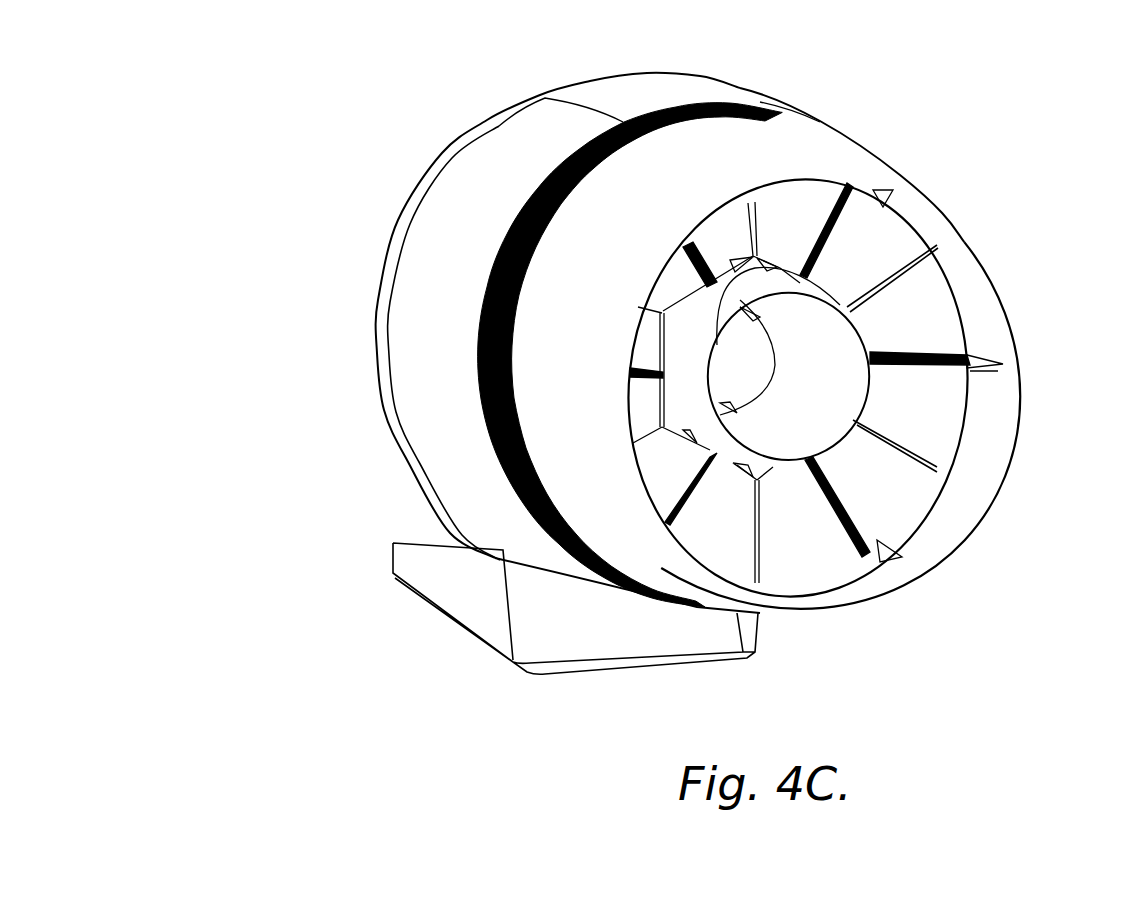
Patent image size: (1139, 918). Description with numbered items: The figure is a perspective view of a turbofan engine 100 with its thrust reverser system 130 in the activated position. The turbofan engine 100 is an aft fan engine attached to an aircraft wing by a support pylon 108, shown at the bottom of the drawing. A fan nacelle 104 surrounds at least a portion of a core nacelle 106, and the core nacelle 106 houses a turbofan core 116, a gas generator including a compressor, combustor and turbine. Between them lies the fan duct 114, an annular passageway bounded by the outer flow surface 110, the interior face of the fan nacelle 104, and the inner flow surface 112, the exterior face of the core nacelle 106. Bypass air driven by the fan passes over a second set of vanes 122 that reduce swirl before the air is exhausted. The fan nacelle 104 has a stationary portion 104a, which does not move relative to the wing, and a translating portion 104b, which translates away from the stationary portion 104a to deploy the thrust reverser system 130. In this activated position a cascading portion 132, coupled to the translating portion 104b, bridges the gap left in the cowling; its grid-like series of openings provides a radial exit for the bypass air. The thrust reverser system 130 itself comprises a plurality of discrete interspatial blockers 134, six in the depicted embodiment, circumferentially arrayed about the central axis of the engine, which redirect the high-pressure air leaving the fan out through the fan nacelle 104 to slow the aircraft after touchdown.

The turbofan engine 100 is at (314, 173).
The fan nacelle 104 is at (617, 87).
The stationary portion 104a is at (486, 124).
The translating portion 104b is at (837, 155).
The core nacelle 106 is at (823, 433).
The support pylon 108 is at (468, 605).
The outer flow surface 110 is at (998, 390).
The inner flow surface 112 is at (698, 338).
The fan duct 114 is at (822, 553).
The turbofan core 116 is at (757, 358).
The second set of vanes 122 is at (905, 308).
The thrust reverser system 130 is at (893, 240).
The cascading portion 132 is at (487, 372).
The interspatial blockers 134 is at (893, 240).